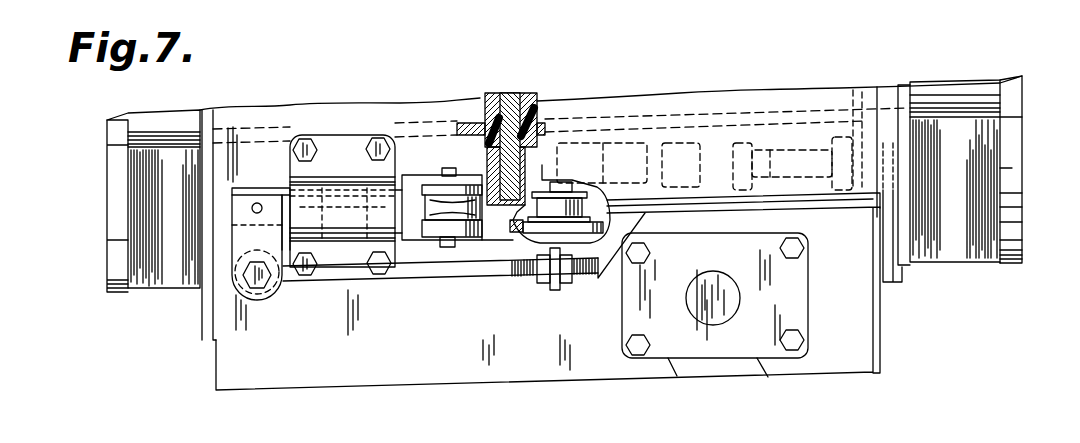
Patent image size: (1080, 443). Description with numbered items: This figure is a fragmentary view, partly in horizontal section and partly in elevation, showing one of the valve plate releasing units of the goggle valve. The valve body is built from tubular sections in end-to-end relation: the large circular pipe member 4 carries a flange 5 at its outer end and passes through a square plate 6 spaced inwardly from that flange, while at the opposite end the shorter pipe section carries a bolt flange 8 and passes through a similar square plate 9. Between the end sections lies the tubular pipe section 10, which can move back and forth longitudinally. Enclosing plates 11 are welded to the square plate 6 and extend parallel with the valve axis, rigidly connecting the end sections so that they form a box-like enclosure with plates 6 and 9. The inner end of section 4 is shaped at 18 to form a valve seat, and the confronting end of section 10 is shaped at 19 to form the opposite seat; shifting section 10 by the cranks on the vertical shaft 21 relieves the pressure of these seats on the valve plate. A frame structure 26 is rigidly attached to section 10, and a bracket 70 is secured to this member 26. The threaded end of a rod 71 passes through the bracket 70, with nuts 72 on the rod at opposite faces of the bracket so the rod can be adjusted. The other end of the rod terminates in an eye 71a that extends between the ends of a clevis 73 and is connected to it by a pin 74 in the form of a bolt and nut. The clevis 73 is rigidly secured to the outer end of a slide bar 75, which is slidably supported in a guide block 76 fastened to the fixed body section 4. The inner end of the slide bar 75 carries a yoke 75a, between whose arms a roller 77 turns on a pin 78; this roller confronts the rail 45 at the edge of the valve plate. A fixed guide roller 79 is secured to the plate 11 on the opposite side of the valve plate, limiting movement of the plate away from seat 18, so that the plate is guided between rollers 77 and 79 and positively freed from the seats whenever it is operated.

The pipe member 4 is at (235, 124).
The flange 5 is at (108, 182).
The square plate 6 is at (200, 253).
The bolt flange 8 is at (1018, 163).
The square plate 9 is at (920, 253).
The tubular pipe section 10 is at (727, 117).
The enclosing plate 11 is at (480, 382).
The valve seat 18 is at (472, 120).
The valve seat 19 is at (543, 97).
The vertical shaft 21 is at (717, 325).
The frame structure 26 is at (692, 133).
The rail 45 is at (507, 207).
The bracket 70 is at (573, 277).
The rod 71 is at (473, 276).
The eye 71a is at (287, 278).
The nut 72 is at (540, 290).
The clevis 73 is at (240, 243).
The pin 74 is at (247, 290).
The slide bar 75 is at (280, 192).
The yoke 75a is at (420, 177).
The guide block 76 is at (341, 180).
The roller 77 is at (453, 218).
The pin 78 is at (445, 167).
The fixed guide roller 79 is at (560, 198).